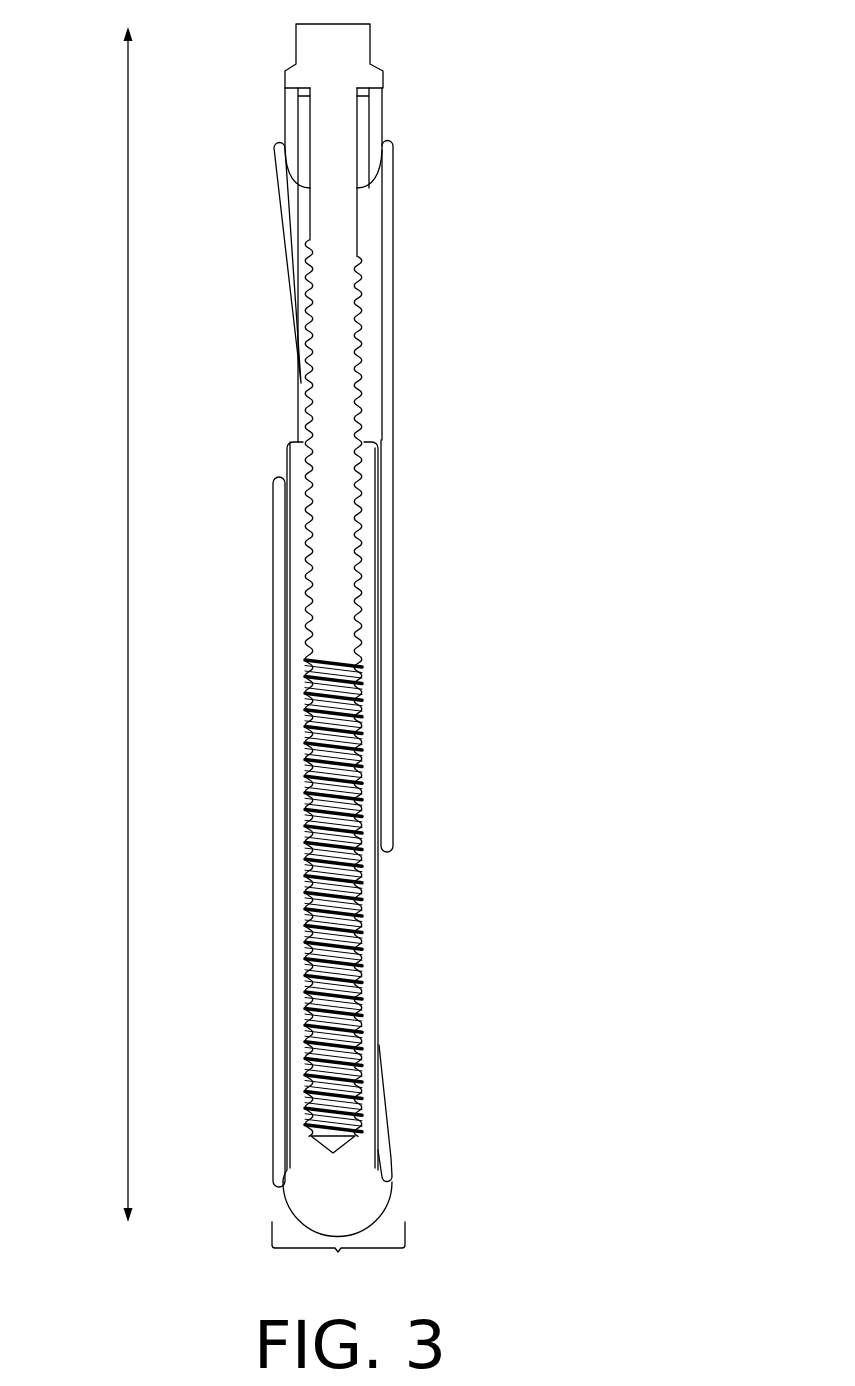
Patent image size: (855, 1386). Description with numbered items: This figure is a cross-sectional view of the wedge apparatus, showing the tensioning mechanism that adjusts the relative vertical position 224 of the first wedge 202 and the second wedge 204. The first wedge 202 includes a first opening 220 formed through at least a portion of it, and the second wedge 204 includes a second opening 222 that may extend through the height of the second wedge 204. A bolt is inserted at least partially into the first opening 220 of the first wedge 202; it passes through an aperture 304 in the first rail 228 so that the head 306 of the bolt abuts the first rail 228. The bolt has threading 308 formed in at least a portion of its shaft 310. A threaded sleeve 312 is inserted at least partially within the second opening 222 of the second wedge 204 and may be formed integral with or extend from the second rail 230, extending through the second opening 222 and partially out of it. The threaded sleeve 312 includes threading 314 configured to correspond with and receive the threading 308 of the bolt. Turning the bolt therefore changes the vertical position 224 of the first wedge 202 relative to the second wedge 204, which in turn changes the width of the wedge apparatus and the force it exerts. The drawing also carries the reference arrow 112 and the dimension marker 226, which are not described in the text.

The fastener assembly 112 is at (448, 35).
The first wedge 202 is at (290, 222).
The second wedge 204 is at (385, 1130).
The first opening 220 is at (271, 295).
The second opening 222 is at (285, 478).
The vertical position 224 is at (108, 624).
The width 226 is at (338, 1255).
The first rail 228 is at (290, 118).
The second rail 230 is at (367, 1183).
The aperture 304 is at (372, 134).
The head 306 is at (303, 68).
The threading 308 is at (300, 385).
The shaft 310 is at (345, 267).
The threaded sleeve 312 is at (373, 500).
The threading 314 is at (360, 735).